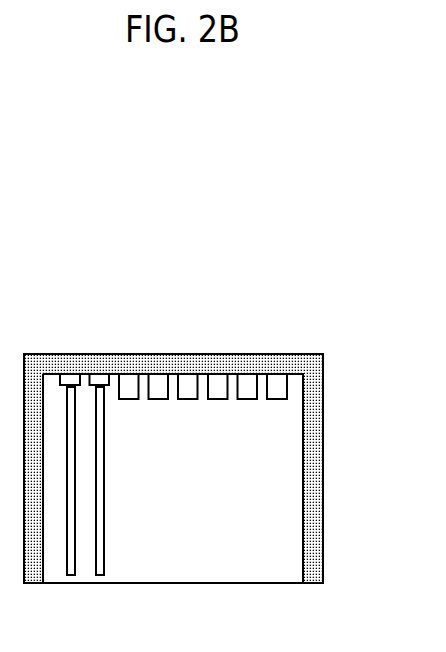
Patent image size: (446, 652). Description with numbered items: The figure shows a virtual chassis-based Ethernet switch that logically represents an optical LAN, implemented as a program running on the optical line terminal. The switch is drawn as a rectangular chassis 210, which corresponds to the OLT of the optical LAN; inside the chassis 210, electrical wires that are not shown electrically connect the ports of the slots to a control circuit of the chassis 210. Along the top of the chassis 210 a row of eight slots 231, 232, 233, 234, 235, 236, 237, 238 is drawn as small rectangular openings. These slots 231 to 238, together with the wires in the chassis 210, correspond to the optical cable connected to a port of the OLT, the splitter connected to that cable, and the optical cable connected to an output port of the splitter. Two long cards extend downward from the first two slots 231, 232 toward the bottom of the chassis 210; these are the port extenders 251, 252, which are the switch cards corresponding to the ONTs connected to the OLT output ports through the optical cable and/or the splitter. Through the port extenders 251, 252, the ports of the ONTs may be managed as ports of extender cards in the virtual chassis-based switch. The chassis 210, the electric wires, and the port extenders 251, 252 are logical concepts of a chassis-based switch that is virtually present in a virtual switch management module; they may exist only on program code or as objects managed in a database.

The chassis 210 is at (318, 447).
The slot 231 is at (70, 382).
The slot 232 is at (100, 382).
The slot 233 is at (130, 385).
The slot 234 is at (158, 385).
The slot 235 is at (190, 385).
The slot 236 is at (220, 385).
The slot 237 is at (250, 385).
The slot 238 is at (278, 385).
The port extender 251 is at (71, 583).
The port extender 252 is at (100, 583).